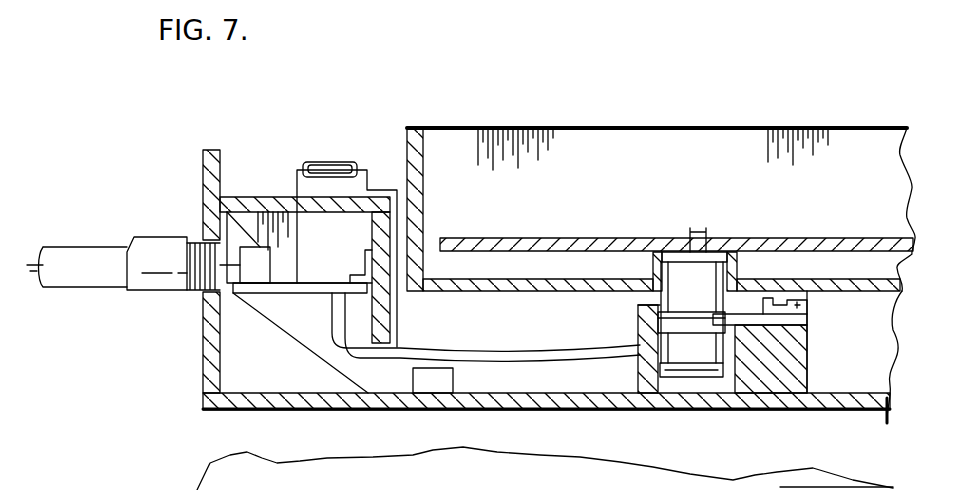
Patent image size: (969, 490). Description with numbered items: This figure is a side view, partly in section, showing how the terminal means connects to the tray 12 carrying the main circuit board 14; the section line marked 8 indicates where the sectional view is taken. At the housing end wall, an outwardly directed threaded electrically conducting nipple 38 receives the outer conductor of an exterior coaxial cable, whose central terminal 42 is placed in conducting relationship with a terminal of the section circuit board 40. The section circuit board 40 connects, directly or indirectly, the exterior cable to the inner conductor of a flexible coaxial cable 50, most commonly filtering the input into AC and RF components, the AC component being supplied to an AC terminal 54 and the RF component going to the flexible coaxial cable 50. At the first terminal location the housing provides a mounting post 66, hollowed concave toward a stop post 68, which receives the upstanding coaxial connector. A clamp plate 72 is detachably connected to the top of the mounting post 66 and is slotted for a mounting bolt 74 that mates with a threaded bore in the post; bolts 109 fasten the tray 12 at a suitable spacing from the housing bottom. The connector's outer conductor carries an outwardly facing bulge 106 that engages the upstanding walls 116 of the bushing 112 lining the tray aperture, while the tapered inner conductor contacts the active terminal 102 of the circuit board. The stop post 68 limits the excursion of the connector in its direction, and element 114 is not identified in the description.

The tray 12 is at (433, 280).
The main circuit board 14 is at (513, 237).
The threaded electrically conducting nipple 38 is at (200, 231).
The section circuit board 40 is at (313, 293).
The central terminal of the exterior coaxial cable 42 is at (30, 277).
The flexible coaxial cable 50 is at (450, 352).
The AC terminal 54 is at (453, 380).
The mounting post 66 is at (807, 380).
The stop post 68 is at (638, 375).
The clamp plate 72 is at (748, 320).
The mounting bolt 74 is at (805, 304).
The active terminal of the circuit board 102 is at (710, 237).
The bulge 106 is at (632, 237).
The bolts 109 is at (666, 489).
The bushing 112 is at (738, 278).
The bushing 114 is at (640, 273).
The upstanding walls 116 is at (742, 253).
The section line 8- 8 is at (585, 310).